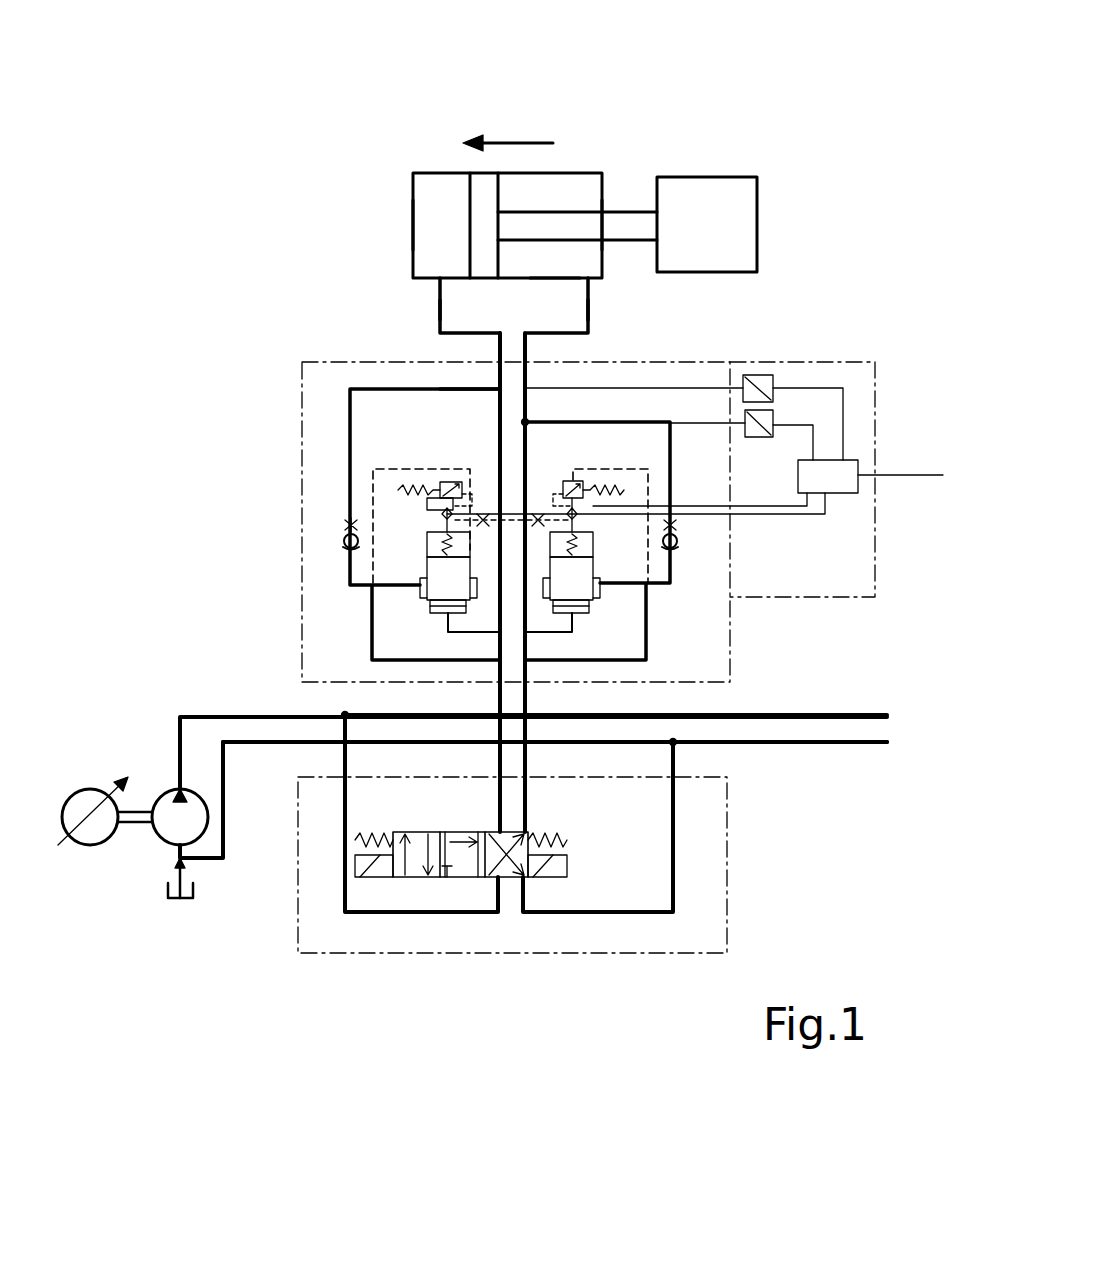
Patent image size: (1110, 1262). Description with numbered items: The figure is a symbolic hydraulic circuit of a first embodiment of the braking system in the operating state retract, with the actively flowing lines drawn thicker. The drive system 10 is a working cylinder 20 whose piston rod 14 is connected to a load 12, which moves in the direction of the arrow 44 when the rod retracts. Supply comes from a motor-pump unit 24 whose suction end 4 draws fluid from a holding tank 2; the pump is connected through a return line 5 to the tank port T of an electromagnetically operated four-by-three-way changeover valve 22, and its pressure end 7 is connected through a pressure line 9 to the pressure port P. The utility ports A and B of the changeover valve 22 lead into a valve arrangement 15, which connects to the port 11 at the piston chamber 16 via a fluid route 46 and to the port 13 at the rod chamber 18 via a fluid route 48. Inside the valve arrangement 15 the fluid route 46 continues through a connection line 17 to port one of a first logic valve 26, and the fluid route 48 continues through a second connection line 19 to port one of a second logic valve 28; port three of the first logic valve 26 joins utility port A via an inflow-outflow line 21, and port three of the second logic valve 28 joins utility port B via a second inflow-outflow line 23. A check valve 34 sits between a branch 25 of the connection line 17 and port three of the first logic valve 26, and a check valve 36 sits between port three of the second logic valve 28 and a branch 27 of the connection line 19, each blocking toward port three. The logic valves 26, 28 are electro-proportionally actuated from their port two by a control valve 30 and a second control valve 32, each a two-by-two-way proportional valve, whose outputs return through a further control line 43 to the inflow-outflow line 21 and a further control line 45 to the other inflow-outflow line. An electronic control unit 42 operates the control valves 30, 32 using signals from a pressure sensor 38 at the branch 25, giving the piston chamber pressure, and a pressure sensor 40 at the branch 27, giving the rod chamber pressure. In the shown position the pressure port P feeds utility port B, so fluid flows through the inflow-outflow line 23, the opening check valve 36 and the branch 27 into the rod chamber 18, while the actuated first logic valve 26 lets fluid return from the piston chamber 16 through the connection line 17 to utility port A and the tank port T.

The holding tank 2 is at (183, 903).
The suction end 4 is at (175, 850).
The return line 5 is at (588, 745).
The pressure end 7 is at (180, 790).
The pressure line 9 is at (343, 810).
The drive system 10 is at (572, 172).
The port 11 is at (443, 282).
The load 12 is at (723, 177).
The port 13 is at (583, 282).
The piston rod 14 is at (508, 228).
The valve arrangement 15 is at (300, 408).
The piston chamber 16 is at (434, 231).
The connection line 17 is at (495, 477).
The rod chamber 18 is at (567, 258).
The second connection line 19 is at (528, 497).
The working cylinder 20 is at (607, 183).
The inflow-outflow line 21 is at (418, 660).
The changeover valve 22 is at (441, 878).
The second inflow-outflow line 23 is at (617, 660).
The motor-pump unit 24 is at (155, 840).
The branch 25 is at (497, 390).
The first logic valve 26 is at (440, 585).
The branch 27 is at (525, 420).
The second logic valve 28 is at (580, 585).
The control valve 30 is at (457, 485).
The second control valve 32 is at (572, 478).
The check valve 34 is at (347, 537).
The check valve 36 is at (676, 535).
The pressure sensor 38 is at (782, 380).
The pressure sensor 40 is at (775, 412).
The electronic control unit 42 is at (845, 497).
The further control line 43 is at (413, 468).
The arrow 44 is at (520, 142).
The further control line 45 is at (593, 467).
The fluid route 46 is at (437, 305).
The fluid route 48 is at (563, 335).